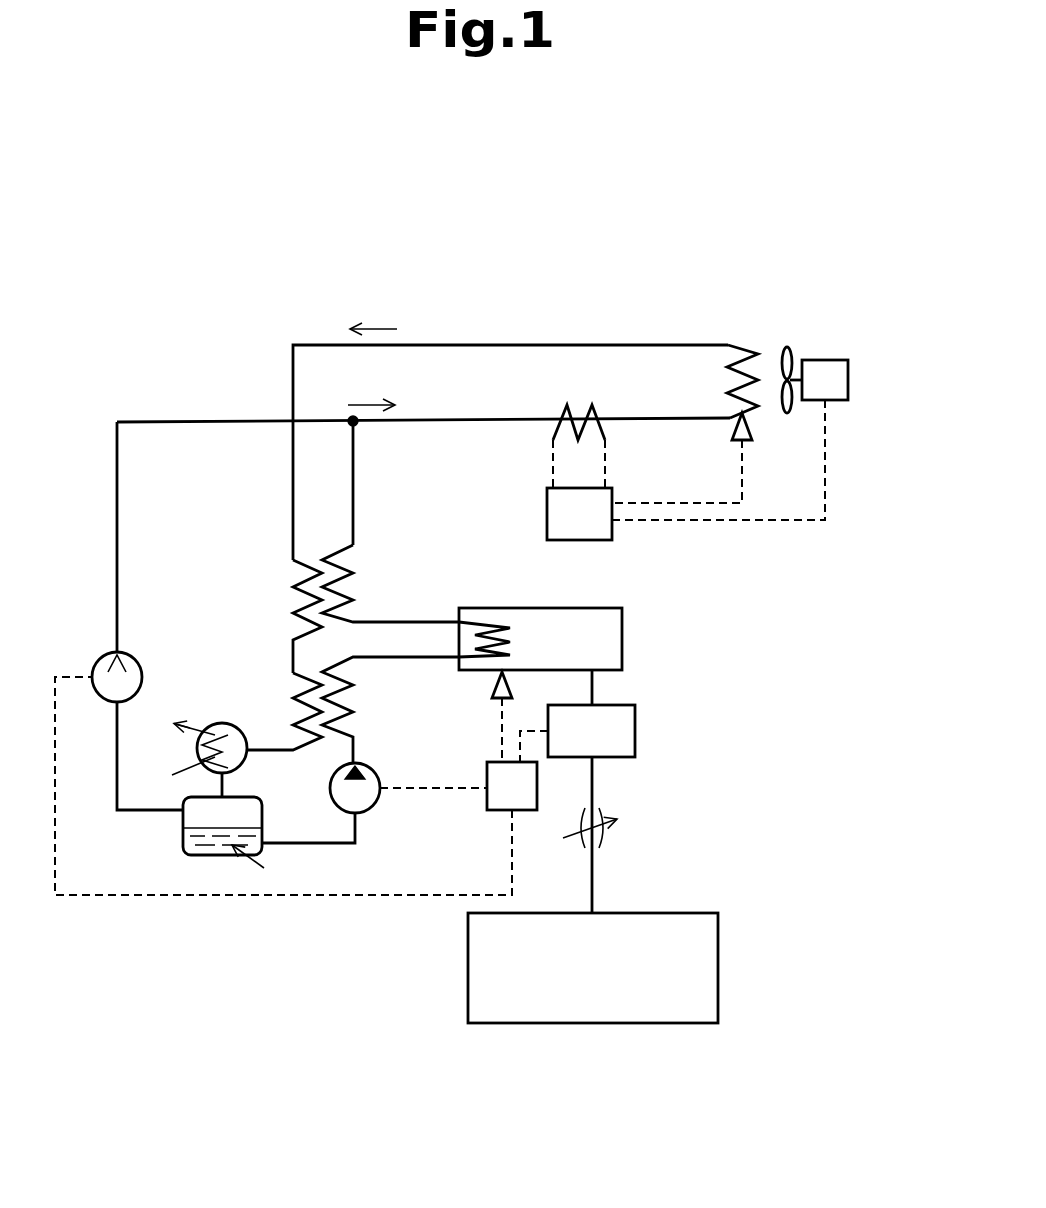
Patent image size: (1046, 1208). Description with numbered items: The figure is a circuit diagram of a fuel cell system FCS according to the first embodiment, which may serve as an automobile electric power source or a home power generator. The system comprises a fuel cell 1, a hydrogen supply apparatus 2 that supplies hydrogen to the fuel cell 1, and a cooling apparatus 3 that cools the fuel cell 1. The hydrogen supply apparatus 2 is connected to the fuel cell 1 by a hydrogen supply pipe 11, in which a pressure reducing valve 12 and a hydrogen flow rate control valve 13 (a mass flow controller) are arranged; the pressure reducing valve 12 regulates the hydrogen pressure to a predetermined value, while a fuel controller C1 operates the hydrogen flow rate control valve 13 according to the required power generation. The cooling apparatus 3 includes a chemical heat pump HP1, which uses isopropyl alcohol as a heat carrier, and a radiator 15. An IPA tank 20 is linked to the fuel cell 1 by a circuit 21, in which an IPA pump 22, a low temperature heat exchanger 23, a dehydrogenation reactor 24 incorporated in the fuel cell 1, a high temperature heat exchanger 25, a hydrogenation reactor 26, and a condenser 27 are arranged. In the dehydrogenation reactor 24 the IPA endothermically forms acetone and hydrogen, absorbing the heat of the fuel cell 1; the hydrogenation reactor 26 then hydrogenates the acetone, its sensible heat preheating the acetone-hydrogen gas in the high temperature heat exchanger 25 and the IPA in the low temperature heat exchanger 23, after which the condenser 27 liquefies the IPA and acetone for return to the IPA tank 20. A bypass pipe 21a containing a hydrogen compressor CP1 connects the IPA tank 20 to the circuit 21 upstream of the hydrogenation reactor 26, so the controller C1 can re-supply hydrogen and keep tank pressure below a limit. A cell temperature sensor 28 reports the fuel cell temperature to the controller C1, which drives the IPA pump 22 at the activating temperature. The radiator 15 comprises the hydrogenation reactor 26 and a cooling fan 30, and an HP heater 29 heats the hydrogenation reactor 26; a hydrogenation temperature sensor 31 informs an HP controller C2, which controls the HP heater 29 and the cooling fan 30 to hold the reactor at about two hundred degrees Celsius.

The fuel cell 1 is at (622, 630).
The hydrogen supply apparatus 2 is at (718, 963).
The cooling apparatus 3 is at (253, 398).
The hydrogen supply pipe 11 is at (592, 882).
The pressure reducing valve 12 is at (605, 835).
The hydrogen flow rate control valve 13 is at (635, 728).
The radiator 15 is at (799, 328).
The IPA tank 20 is at (183, 818).
The circuit 21 is at (355, 473).
The bypass pipe 21a is at (185, 425).
The IPA pump 22 is at (380, 805).
The low temperature heat exchanger 23 is at (274, 695).
The dehydrogenation reactor 24 is at (497, 625).
The high temperature heat exchanger 25 is at (278, 590).
The hydrogenation reactor 26 is at (742, 343).
The condenser 27 is at (215, 727).
The cell temperature sensor 28 is at (493, 683).
The HP heater 29 is at (595, 413).
The cooling fan 30 is at (848, 375).
The hydrogenation temperature sensor 31 is at (755, 428).
The fuel controller C1 is at (487, 800).
The HP controller C2 is at (547, 508).
The hydrogen compressor CP1 is at (135, 655).
The chemical heat pump HP1 is at (271, 319).
The fuel cell system FCS is at (589, 329).